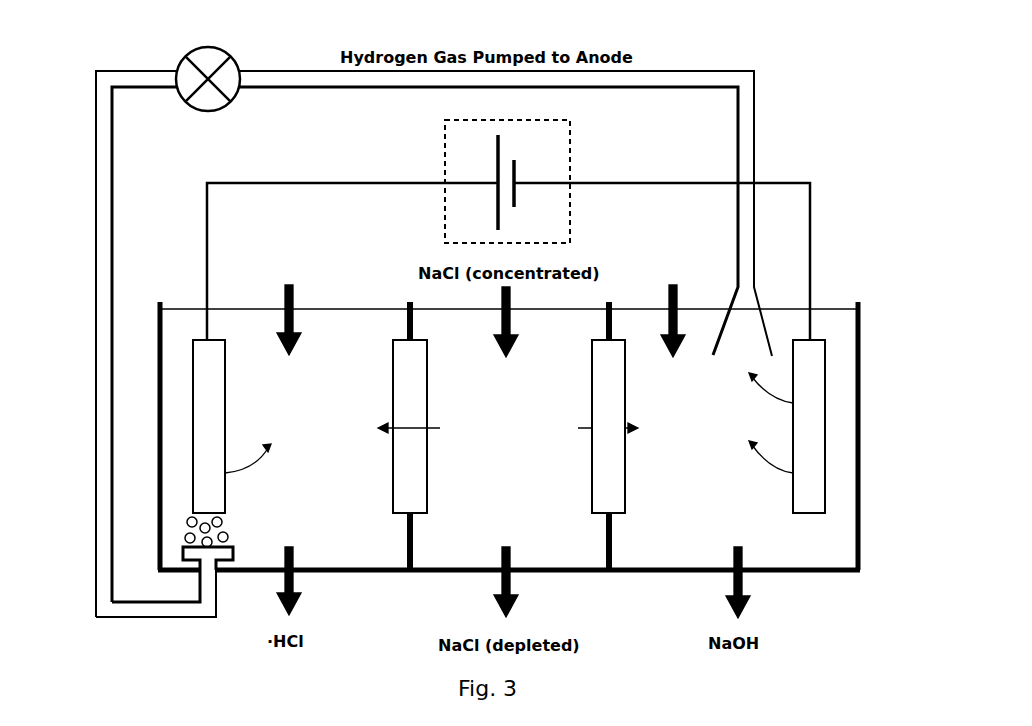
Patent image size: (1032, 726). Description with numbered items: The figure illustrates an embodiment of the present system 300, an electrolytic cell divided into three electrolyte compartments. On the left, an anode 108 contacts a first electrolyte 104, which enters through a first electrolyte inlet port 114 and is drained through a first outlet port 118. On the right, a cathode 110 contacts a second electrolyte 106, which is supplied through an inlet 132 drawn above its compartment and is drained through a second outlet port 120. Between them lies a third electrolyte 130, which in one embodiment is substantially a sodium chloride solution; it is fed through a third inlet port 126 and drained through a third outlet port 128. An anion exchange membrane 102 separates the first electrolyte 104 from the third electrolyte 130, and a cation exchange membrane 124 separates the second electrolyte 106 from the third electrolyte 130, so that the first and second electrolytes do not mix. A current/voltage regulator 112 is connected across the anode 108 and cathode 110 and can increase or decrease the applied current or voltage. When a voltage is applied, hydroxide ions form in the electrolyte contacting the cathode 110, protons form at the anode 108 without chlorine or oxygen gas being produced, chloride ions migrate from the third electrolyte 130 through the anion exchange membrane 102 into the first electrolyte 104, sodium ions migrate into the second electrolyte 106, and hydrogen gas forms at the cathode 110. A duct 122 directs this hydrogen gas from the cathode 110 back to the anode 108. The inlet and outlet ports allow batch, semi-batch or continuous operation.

The system 300 is at (818, 112).
The duct 122 is at (95, 387).
The current/voltage regulator 112 is at (570, 143).
The anode 108 is at (193, 338).
The first electrolyte 104 is at (248, 332).
The first electrolyte inlet port 114 is at (288, 285).
The anion exchange membrane 102 is at (393, 339).
The third electrolyte 130 is at (473, 340).
The third inlet port 126 is at (510, 300).
The cation exchange membrane 124 is at (625, 339).
The cathode compartment inlet 132 is at (673, 287).
The second electrolyte 106 is at (704, 332).
The cathode 110 is at (825, 340).
The first outlet port 118 is at (302, 602).
The third outlet port 128 is at (517, 595).
The second outlet port 120 is at (748, 590).